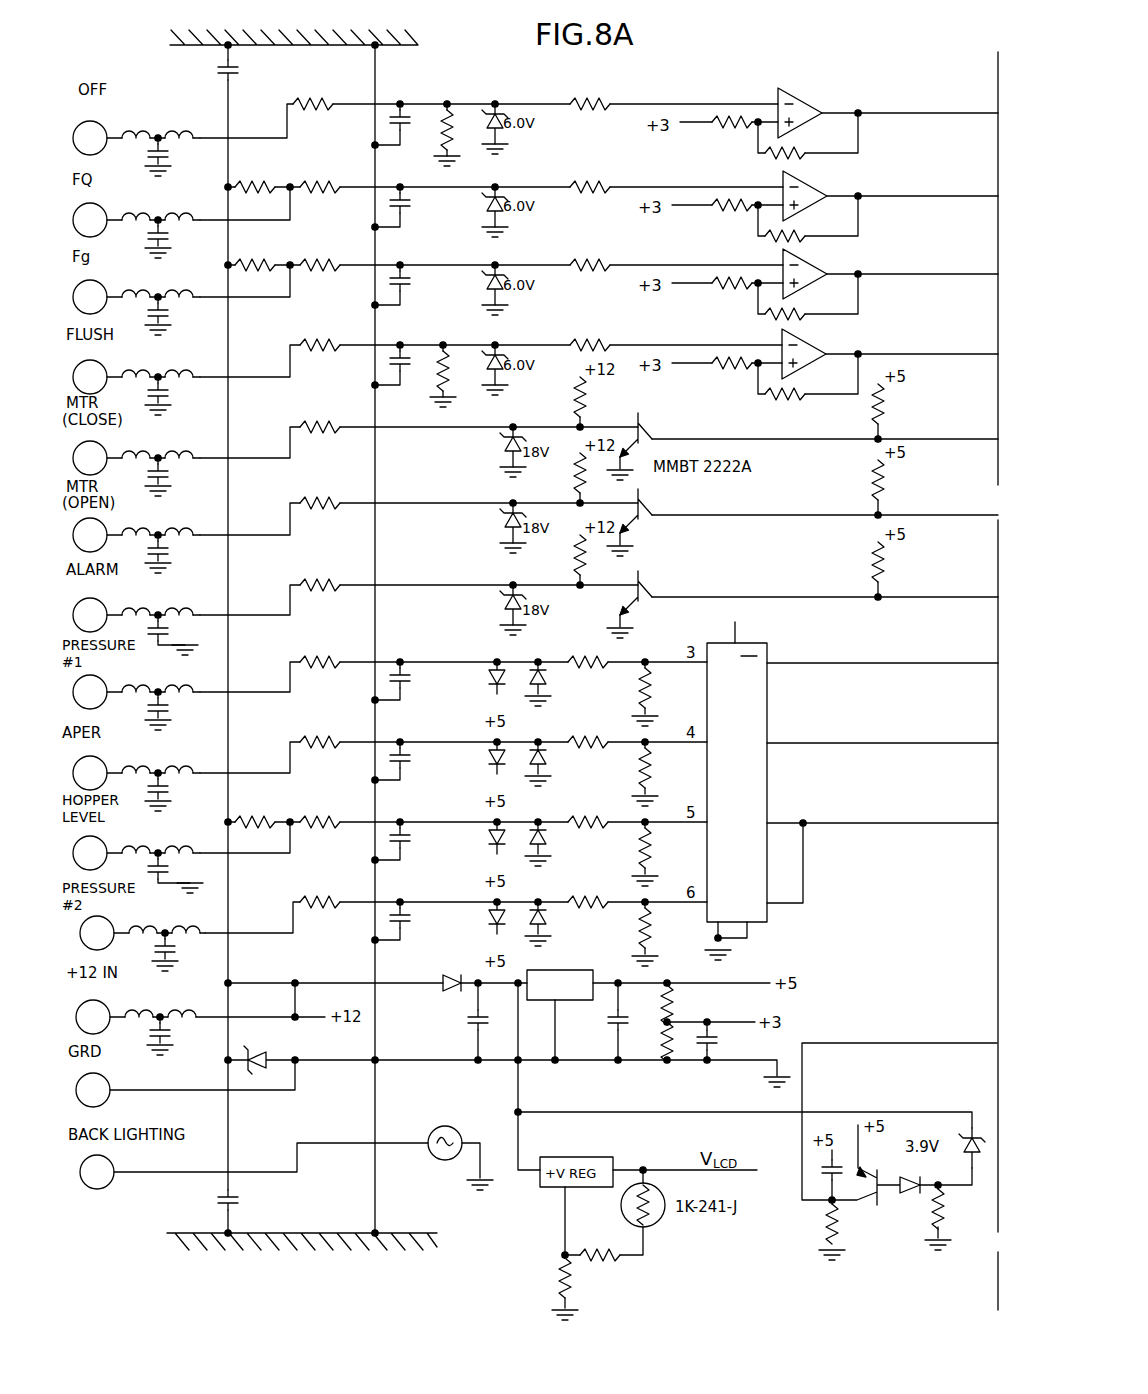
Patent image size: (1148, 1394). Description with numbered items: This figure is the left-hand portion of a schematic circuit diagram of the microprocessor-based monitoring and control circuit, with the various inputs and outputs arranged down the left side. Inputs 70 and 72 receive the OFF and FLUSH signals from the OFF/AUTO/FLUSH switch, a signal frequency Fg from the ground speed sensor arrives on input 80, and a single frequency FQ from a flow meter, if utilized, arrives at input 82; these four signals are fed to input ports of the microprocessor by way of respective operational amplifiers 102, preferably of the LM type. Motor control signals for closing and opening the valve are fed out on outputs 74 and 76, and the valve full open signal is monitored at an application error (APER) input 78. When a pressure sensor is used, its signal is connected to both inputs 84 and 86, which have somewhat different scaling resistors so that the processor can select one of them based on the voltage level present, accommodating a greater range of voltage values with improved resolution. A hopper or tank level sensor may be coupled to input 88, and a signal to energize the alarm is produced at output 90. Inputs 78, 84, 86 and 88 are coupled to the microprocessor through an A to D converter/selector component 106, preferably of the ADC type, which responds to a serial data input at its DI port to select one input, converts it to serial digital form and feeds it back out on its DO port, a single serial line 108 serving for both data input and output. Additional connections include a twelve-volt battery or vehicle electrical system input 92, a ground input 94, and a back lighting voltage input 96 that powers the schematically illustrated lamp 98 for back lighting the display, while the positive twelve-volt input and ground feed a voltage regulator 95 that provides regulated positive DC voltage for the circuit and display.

The OFF signal input 70 is at (108, 130).
The FQ frequency input 82 is at (108, 212).
The Fg frequency input 80 is at (106, 289).
The FLUSH signal input 72 is at (106, 369).
The motor close output 74 is at (106, 468).
The motor open output 76 is at (106, 545).
The alarm output 90 is at (106, 607).
The first pressure sensor input 84 is at (106, 684).
The application error (APER) input 78 is at (104, 762).
The hopper level input 88 is at (106, 845).
The second pressure sensor input 86 is at (127, 915).
The 12-volt vehicle electrical system input 92 is at (108, 1028).
The ground input 94 is at (108, 1080).
The back lighting voltage input 96 is at (106, 1186).
The lamp 98 is at (436, 1124).
The voltage regulator 95 is at (606, 960).
The operational amplifier 102 is at (786, 90).
The A to D converter/selector component 106 is at (783, 925).
The serial line 108 is at (904, 812).